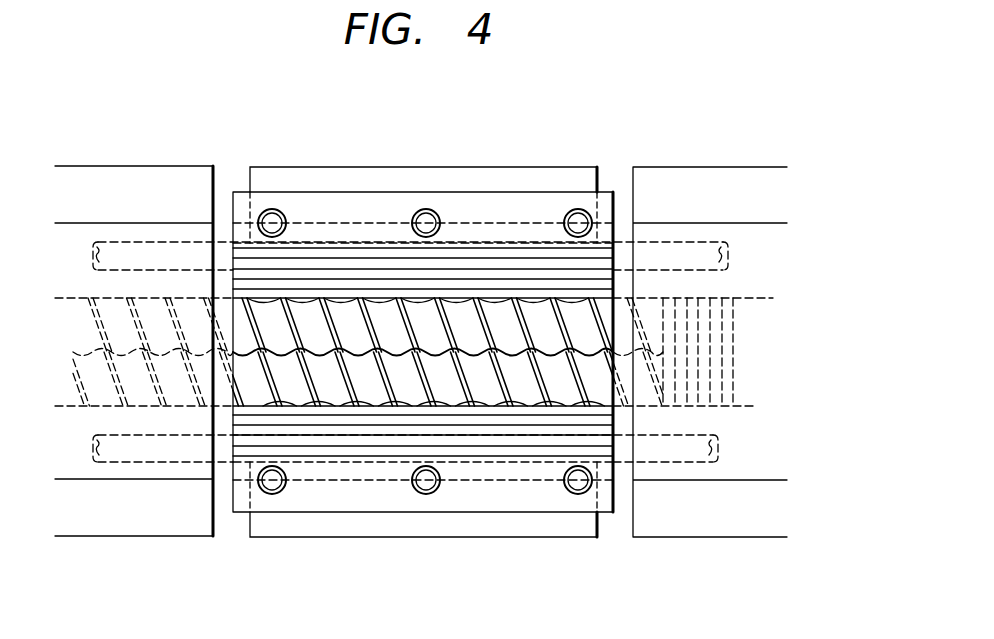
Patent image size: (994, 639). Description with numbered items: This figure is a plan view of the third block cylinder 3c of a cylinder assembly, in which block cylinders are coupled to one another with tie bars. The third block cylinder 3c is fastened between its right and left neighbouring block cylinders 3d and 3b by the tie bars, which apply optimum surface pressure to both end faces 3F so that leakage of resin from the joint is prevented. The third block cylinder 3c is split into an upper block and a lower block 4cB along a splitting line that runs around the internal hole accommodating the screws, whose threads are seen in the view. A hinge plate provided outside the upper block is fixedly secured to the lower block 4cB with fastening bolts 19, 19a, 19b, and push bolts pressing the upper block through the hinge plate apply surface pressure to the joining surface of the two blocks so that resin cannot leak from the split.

The block cylinder 3b is at (134, 150).
The third block cylinder 3c is at (507, 156).
The block cylinder 3d is at (745, 152).
The end face 3F is at (596, 327).
The bearing block flange 4cB is at (325, 177).
The fastening bolt 19 is at (273, 220).
The bolt hole 19a is at (426, 221).
The bolt hole 19b is at (580, 222).